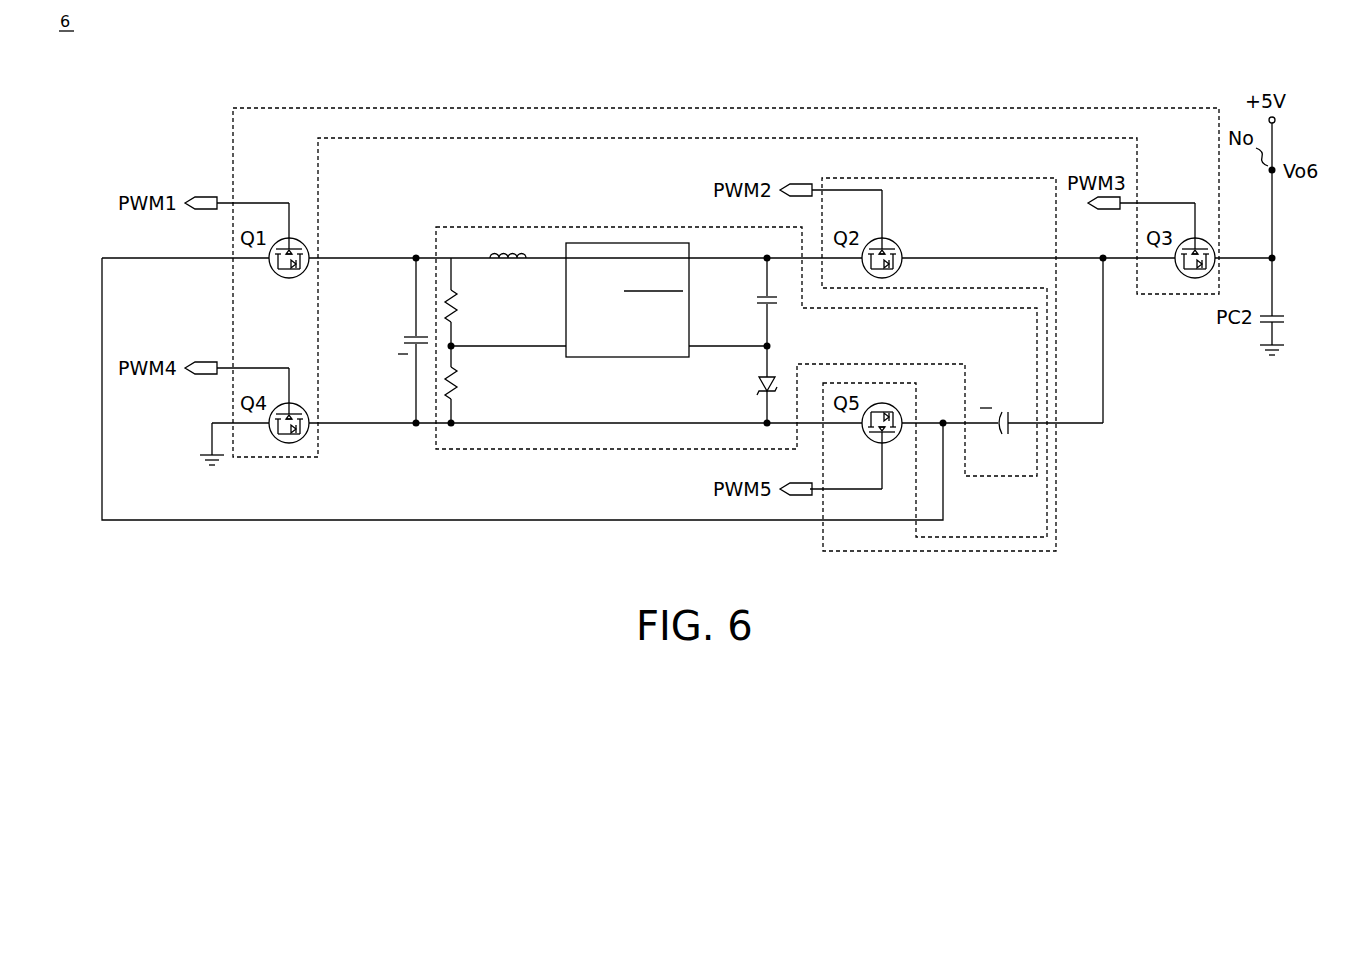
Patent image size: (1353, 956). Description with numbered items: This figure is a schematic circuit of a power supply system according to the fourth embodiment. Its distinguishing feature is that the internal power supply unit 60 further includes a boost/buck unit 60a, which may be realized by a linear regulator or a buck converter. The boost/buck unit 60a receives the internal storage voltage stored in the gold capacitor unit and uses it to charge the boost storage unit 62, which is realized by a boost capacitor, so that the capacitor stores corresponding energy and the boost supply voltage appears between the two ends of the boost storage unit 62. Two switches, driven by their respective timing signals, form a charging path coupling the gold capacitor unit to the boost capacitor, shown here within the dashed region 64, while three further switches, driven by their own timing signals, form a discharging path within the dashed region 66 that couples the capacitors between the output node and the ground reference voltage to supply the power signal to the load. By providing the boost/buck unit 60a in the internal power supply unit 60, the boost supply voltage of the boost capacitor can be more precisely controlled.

The internal power supply unit 60 is at (736, 364).
The boost/buck unit 60a is at (627, 357).
The boost storage unit 62 is at (400, 357).
The switch circuit 64 is at (940, 551).
The switch circuit 66 is at (730, 106).